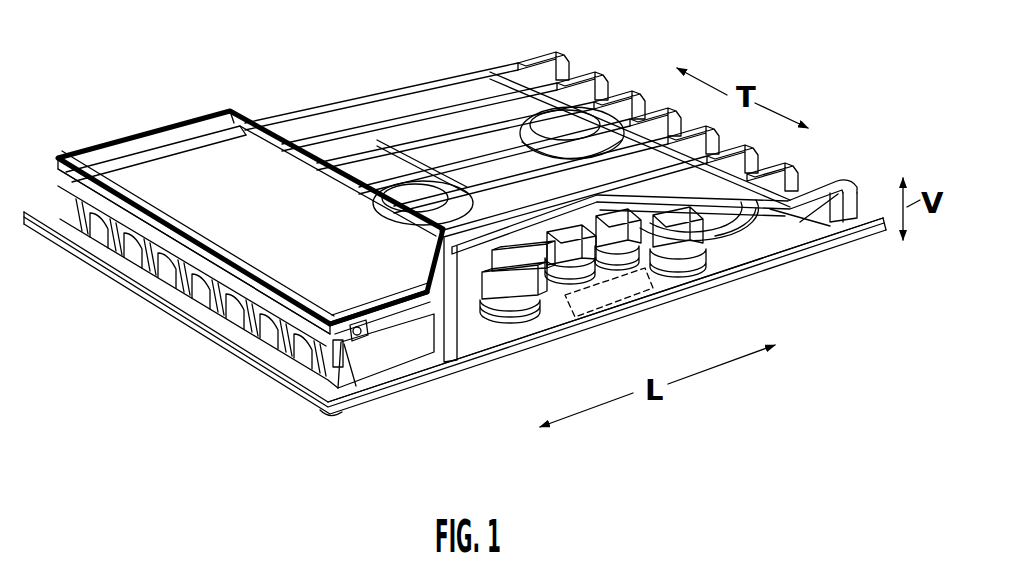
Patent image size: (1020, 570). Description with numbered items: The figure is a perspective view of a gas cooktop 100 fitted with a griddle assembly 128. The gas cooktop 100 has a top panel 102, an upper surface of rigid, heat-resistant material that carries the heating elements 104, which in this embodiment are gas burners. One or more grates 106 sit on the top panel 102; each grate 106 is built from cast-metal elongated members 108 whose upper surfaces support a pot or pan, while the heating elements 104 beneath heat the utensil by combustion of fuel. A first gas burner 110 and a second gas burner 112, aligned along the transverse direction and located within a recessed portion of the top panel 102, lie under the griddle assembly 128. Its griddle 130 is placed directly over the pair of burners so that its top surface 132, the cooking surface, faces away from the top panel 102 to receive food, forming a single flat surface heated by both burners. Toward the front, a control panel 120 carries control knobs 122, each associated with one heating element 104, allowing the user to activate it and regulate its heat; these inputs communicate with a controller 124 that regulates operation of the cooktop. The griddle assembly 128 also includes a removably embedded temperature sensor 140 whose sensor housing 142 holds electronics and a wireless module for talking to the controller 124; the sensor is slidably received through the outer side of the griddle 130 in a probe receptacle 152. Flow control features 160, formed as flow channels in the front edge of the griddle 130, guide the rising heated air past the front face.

The gas cooktop 100 is at (140, 70).
The top panel 102 is at (207, 320).
The heating elements 104 is at (440, 197).
The grates 106 is at (545, 50).
The elongated members 108 is at (407, 328).
The first gas burner 110 is at (173, 257).
The second gas burner 112 is at (297, 345).
The control panel 120 is at (555, 313).
The control knobs 122 is at (700, 240).
The controller 124 is at (657, 287).
The griddle assembly 128 is at (255, 290).
The griddle 130 is at (128, 212).
The top surface 132 is at (262, 193).
The temperature sensor 140 is at (362, 348).
The sensor housing 142 is at (330, 418).
The probe receptacle 152 is at (353, 317).
The flow control features 160 is at (400, 298).